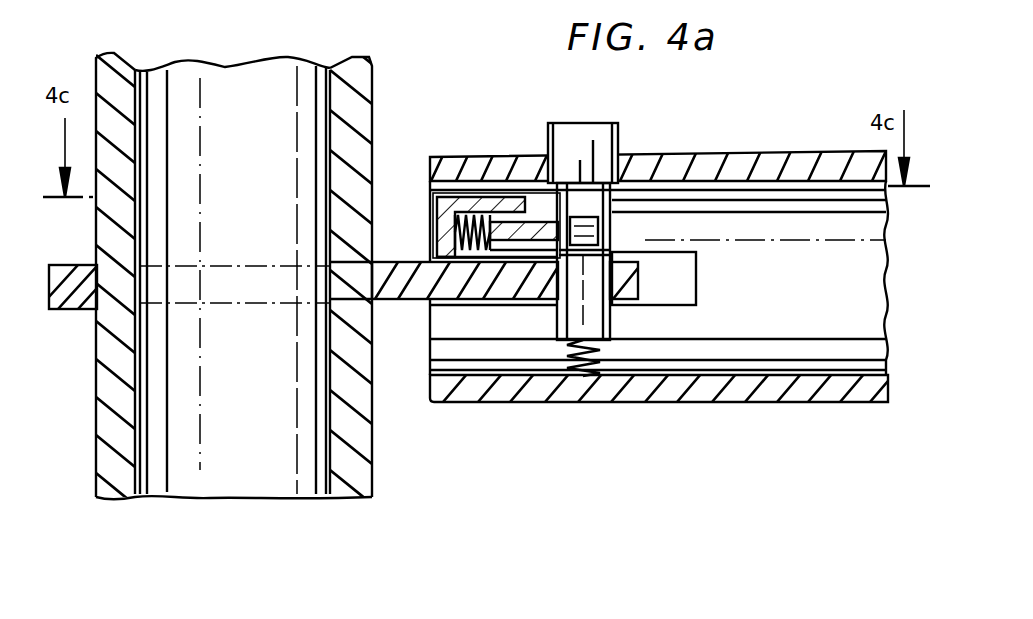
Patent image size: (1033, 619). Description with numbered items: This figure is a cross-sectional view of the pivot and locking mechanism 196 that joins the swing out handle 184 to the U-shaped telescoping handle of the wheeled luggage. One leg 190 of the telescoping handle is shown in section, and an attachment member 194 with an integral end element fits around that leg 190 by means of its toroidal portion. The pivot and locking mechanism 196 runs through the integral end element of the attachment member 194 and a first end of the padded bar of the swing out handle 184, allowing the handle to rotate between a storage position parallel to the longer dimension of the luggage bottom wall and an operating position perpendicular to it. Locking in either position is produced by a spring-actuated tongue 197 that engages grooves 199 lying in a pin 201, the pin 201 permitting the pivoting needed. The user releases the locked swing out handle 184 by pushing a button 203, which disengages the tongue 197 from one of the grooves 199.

The swing out handle 184 is at (830, 136).
The leg 190 is at (118, 498).
The attachment member 194 is at (418, 302).
The pivot and locking mechanism 196 is at (636, 204).
The spring-actuated tongue 197 is at (545, 215).
The grooves 199 is at (592, 233).
The pin 201 is at (615, 323).
The button 203 is at (573, 123).